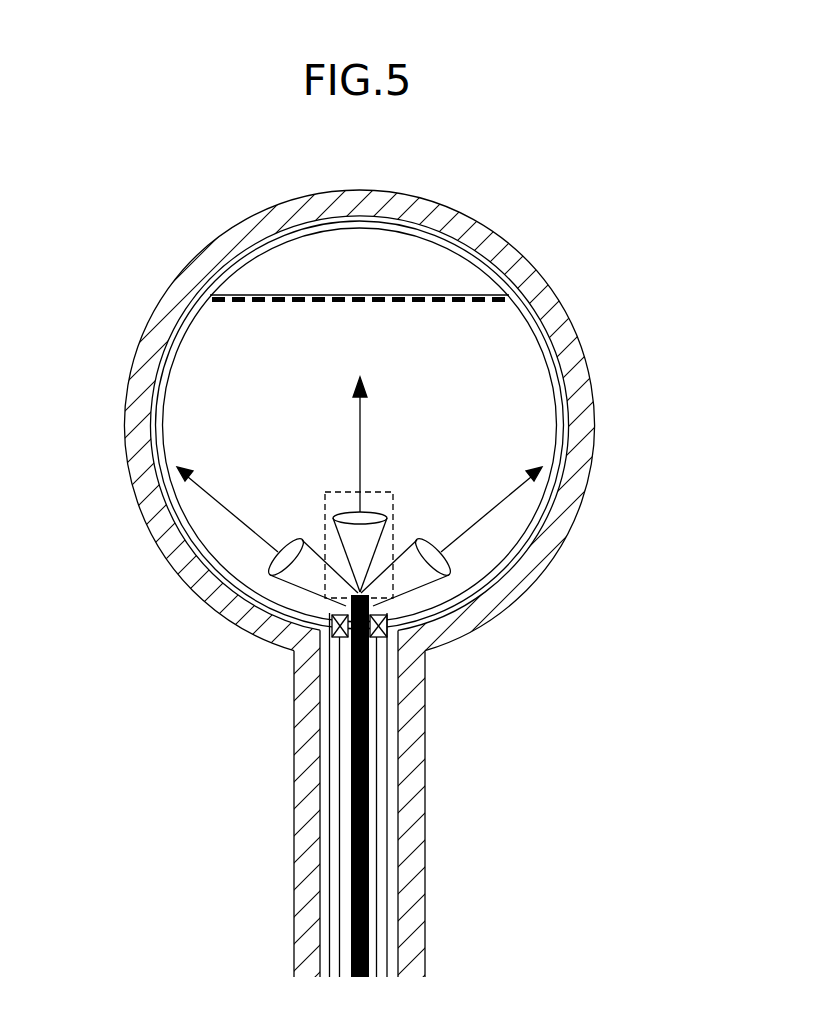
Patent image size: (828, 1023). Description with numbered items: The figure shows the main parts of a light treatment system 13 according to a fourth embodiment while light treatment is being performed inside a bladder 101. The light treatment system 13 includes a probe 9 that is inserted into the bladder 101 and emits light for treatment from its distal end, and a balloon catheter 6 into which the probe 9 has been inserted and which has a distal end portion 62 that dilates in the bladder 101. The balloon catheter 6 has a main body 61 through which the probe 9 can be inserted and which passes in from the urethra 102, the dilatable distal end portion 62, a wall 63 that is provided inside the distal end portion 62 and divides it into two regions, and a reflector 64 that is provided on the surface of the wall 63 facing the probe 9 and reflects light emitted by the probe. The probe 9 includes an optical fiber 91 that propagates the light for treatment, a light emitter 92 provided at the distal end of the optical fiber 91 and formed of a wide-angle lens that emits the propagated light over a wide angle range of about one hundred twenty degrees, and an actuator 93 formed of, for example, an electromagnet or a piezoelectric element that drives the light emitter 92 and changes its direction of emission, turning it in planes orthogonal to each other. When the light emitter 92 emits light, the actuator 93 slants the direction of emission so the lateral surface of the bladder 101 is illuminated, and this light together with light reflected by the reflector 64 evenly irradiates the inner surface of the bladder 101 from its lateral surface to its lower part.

The balloon catheter 6 is at (163, 383).
The probe 9 is at (370, 737).
The light treatment system 13 is at (481, 256).
The main body 61 is at (328, 746).
The distal end portion 62 is at (174, 512).
The wall 63 is at (268, 294).
The reflector 64 is at (370, 313).
The optical fiber 91 is at (378, 703).
The light emitter 92 is at (386, 492).
The actuator 93 is at (384, 616).
The bladder 101 is at (582, 394).
The urethra 102 is at (413, 781).